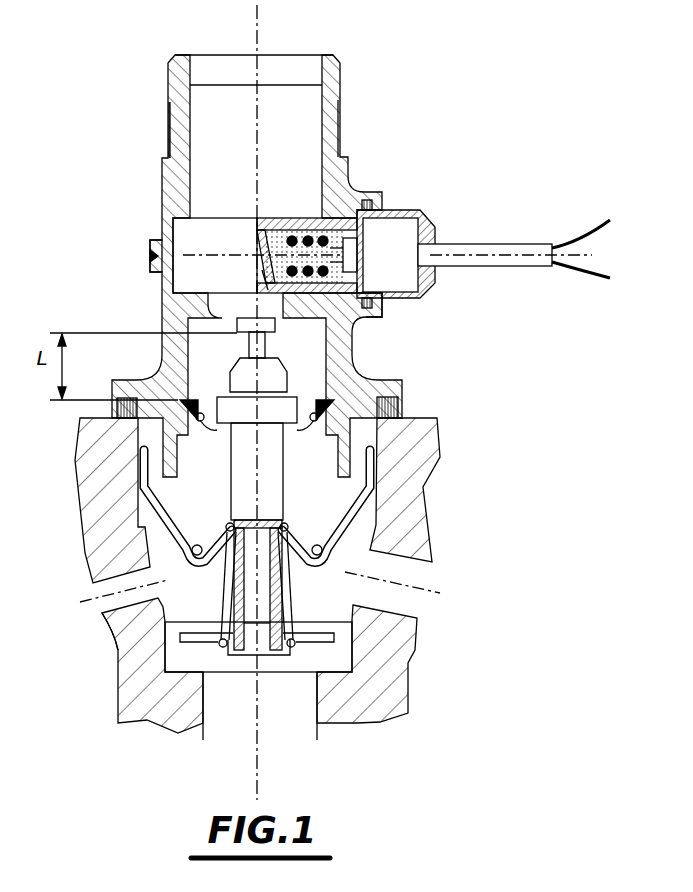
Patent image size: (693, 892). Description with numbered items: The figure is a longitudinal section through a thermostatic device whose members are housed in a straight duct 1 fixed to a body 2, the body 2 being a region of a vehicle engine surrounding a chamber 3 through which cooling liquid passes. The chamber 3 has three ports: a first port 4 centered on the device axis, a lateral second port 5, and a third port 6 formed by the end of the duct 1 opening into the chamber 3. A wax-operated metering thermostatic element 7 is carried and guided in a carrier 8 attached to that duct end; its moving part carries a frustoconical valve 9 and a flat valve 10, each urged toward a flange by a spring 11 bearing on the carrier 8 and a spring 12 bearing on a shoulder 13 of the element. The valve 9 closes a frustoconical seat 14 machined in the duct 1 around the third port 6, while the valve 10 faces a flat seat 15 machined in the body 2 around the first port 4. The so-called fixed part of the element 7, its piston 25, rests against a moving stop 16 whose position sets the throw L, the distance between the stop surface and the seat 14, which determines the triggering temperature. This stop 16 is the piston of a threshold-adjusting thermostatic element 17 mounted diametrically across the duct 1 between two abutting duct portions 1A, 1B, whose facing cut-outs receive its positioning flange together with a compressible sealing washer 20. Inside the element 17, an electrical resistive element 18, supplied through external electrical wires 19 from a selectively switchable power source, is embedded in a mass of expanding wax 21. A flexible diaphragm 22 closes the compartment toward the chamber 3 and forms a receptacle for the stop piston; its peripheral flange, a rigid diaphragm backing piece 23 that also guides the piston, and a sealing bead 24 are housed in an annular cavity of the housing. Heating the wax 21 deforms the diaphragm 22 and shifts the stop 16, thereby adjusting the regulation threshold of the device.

The duct 1 is at (337, 98).
The first duct portion 1A is at (162, 174).
The second duct portion 1B is at (163, 299).
The body 2 is at (418, 460).
The chamber 3 is at (189, 604).
The first port 4 is at (260, 706).
The second port 5 is at (392, 600).
The third port 6 is at (188, 385).
The thermostatic element 7 is at (273, 465).
The carrier 8 is at (292, 524).
The frustoconical valve 9 is at (345, 405).
The flat valve 10 is at (306, 636).
The spring 11 is at (200, 494).
The spring 12 is at (100, 604).
The shoulder 13 is at (302, 522).
The frustoconical seat 14 is at (352, 372).
The flat seat 15 is at (120, 645).
The stop 16 is at (240, 322).
The threshold-adjusting element 17 is at (290, 238).
The electrical resistive element 18 is at (325, 218).
The external electrical wires 19 is at (602, 268).
The sealing washer 20 is at (385, 195).
The expanding wax 21 is at (275, 235).
The flexible diaphragm 22 is at (258, 288).
The diaphragm backing piece 23 is at (262, 274).
The sealing bead 24 is at (384, 316).
The piston 25 is at (262, 343).